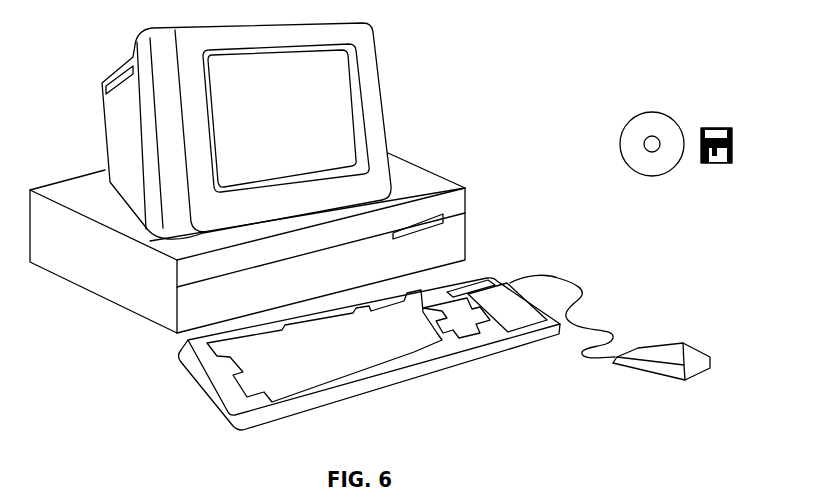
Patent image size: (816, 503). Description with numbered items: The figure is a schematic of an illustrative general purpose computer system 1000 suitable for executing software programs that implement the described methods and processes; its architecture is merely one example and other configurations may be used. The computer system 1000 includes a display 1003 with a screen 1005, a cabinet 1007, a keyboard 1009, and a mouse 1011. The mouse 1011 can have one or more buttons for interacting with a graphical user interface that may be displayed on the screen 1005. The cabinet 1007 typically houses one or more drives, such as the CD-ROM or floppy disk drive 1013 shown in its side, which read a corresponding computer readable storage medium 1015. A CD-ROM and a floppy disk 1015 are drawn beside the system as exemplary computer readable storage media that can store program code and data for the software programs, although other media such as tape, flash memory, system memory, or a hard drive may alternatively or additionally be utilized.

The general purpose computer system 1000 is at (594, 47).
The display 1003 is at (388, 125).
The screen 1005 is at (353, 72).
The cabinet 1007 is at (130, 314).
The keyboard 1009 is at (373, 390).
The mouse 1011 is at (697, 350).
The CD-ROM or floppy disk drive 1013 is at (443, 214).
The computer readable storage medium 1015 is at (702, 93).